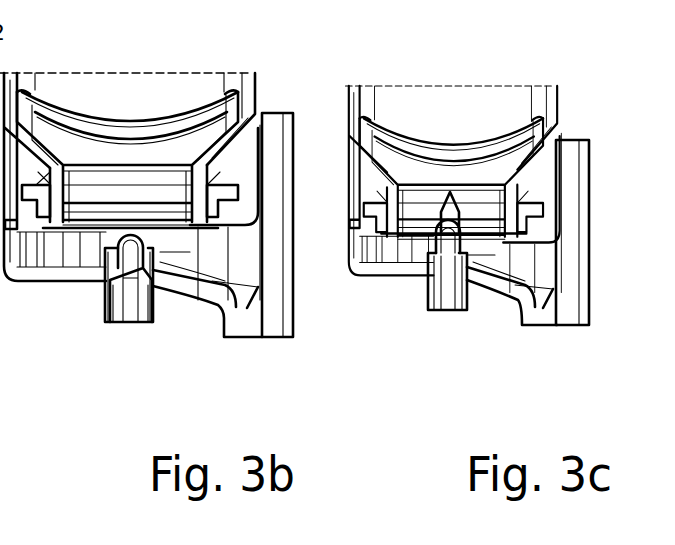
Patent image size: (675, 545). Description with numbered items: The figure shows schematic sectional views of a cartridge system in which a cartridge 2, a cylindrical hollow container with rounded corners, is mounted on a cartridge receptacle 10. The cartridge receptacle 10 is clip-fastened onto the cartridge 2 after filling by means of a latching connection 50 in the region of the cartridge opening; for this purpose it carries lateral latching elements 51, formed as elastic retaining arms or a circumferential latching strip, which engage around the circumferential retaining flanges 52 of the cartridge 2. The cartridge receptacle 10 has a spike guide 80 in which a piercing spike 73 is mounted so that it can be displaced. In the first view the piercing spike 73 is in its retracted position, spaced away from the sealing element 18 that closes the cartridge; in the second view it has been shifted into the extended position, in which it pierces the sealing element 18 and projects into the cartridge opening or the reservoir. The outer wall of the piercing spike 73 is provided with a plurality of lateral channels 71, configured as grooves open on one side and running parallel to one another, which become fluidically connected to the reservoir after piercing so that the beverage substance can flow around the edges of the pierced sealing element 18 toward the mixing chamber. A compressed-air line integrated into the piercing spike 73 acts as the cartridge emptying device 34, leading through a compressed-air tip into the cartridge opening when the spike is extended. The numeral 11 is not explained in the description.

In FIG. 3B, the cartridge 2 is at (155, 101).
In FIG. 3C, the cartridge 2 is at (444, 118).
In FIG. 3B, the cartridge receptacle 10 is at (215, 290).
In FIG. 3C, the cartridge receptacle 10 is at (530, 292).
In FIG. 3B, the mounting rail 11 is at (262, 327).
In FIG. 3C, the mounting rail 11 is at (580, 308).
In FIG. 3B, the sealing element 18 is at (100, 232).
In FIG. 3C, the sealing element 18 is at (413, 235).
In FIG. 3C, the cartridge emptying device 34 is at (444, 200).
In FIG. 3B, the latching connection 50 is at (233, 185).
In FIG. 3C, the lateral latching elements 51 is at (535, 186).
In FIG. 3B, the circumferential retaining flanges 52 is at (33, 170).
In FIG. 3C, the circumferential retaining flanges 52 is at (375, 208).
In FIG. 3B, the lateral channels 71 is at (160, 305).
In FIG. 3C, the lateral channels 71 is at (515, 245).
In FIG. 3B, the piercing spike 73 is at (103, 290).
In FIG. 3C, the piercing spike 73 is at (490, 205).
In FIG. 3B, the spike guide 80 is at (160, 268).
In FIG. 3C, the spike guide 80 is at (482, 308).